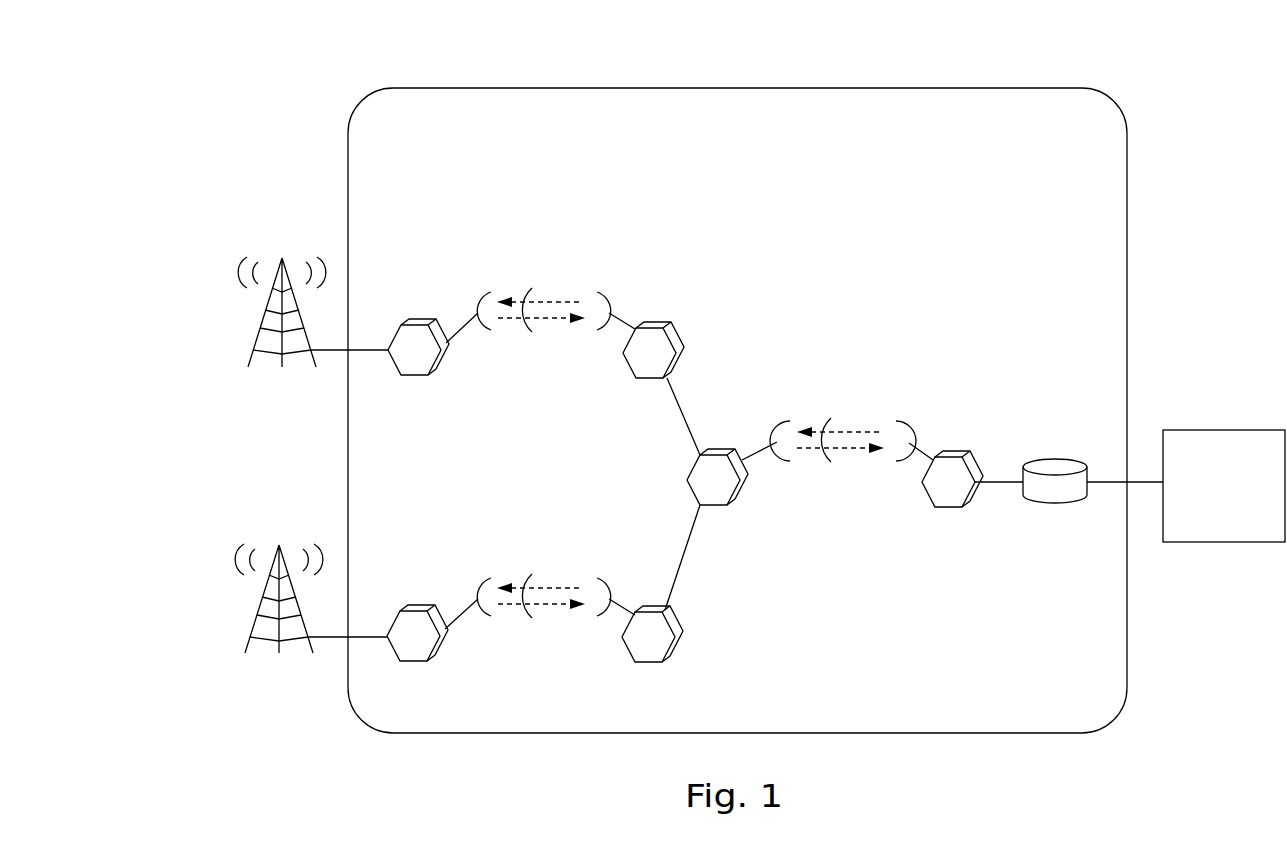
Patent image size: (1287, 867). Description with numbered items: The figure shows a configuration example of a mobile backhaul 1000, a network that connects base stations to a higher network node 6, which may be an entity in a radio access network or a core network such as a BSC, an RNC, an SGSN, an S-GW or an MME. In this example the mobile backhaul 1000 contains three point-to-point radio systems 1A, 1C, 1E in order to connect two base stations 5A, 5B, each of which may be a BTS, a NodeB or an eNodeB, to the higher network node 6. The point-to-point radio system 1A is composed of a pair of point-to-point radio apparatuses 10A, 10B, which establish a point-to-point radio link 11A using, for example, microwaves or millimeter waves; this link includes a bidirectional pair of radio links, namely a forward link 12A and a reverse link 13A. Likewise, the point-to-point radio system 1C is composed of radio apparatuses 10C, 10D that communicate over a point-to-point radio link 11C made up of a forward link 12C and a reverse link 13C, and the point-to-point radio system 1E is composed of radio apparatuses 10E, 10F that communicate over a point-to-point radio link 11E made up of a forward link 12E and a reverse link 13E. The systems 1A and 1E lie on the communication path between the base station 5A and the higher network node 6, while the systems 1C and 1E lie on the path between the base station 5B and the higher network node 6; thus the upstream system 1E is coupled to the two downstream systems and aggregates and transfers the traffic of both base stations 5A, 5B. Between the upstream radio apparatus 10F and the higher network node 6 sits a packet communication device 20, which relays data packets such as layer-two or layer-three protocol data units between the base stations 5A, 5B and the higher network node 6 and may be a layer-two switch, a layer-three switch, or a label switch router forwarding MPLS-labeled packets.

The mobile backhaul 1000 is at (913, 88).
The point-to-point radio system 1A is at (540, 266).
The point-to-point radio system 1C is at (540, 551).
The point-to-point radio system 1E is at (837, 389).
The base station 5A is at (276, 370).
The base station 5B is at (273, 656).
The higher network node 6 is at (1240, 430).
The point-to-point radio apparatus 10A is at (420, 320).
The point-to-point radio apparatus 10B is at (660, 326).
The point-to-point radio apparatus 10C is at (420, 606).
The point-to-point radio apparatus 10D is at (678, 630).
The point-to-point radio apparatus 10E is at (711, 452).
The point-to-point radio apparatus 10F is at (957, 455).
The point-to-point radio link 11A is at (527, 297).
The point-to-point radio link 11C is at (527, 583).
The point-to-point radio link 11E is at (828, 427).
The forward link 12A is at (552, 300).
The forward link 12C is at (552, 586).
The forward link 12E is at (855, 430).
The reverse link 13A is at (556, 322).
The reverse link 13C is at (556, 608).
The reverse link 13E is at (858, 452).
The packet communication device 20 is at (1057, 459).